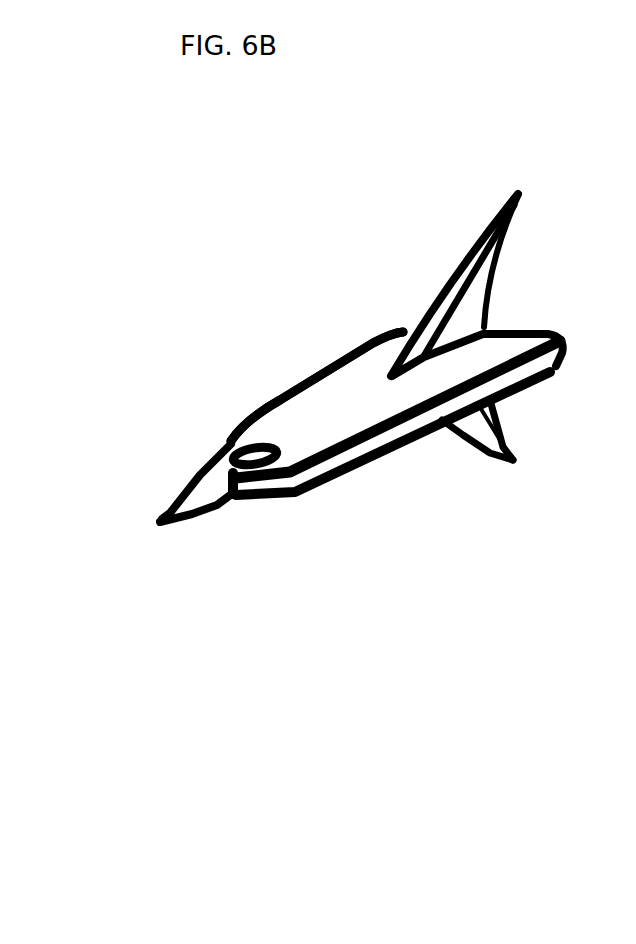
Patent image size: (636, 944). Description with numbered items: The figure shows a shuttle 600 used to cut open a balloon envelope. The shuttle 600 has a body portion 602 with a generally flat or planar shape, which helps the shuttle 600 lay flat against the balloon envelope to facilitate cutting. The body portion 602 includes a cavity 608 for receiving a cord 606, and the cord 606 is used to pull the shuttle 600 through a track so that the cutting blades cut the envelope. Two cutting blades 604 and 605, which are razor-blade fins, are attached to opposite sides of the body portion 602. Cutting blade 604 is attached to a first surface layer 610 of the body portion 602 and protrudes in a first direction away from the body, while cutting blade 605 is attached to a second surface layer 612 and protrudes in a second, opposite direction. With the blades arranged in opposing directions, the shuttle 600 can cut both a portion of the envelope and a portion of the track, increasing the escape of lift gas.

The shuttle 600 is at (545, 38).
The body portion 602 is at (288, 390).
The cutting blade 604 is at (451, 263).
The cutting blade 605 is at (503, 462).
The cord 606 is at (220, 512).
The cavity 608 is at (227, 443).
The first surface layer 610 is at (350, 388).
The second surface layer 612 is at (383, 466).